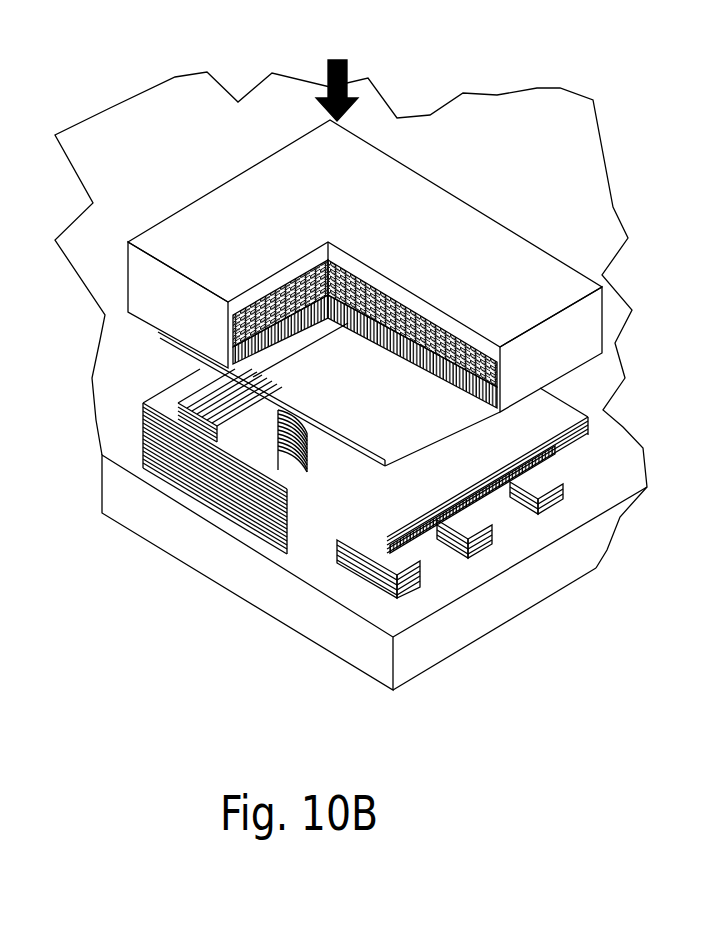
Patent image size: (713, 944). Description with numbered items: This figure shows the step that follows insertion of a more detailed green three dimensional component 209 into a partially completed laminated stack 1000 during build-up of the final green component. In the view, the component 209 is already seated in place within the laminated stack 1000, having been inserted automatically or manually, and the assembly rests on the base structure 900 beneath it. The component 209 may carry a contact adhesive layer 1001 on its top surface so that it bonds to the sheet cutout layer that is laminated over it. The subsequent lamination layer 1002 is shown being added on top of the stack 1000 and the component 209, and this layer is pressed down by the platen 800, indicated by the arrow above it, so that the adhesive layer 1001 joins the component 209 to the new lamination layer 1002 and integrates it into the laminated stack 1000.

The platen 800 is at (178, 242).
The layered substrate stack 900 is at (233, 522).
The partially completed laminated stack 1000 is at (560, 405).
The contact adhesive layer 1001 is at (488, 529).
The subsequent lamination layer 1002 is at (387, 442).
The green three dimensional component 209 is at (492, 488).